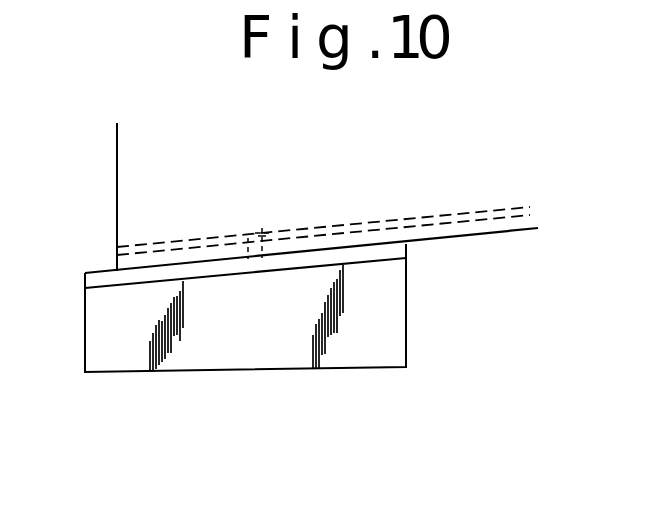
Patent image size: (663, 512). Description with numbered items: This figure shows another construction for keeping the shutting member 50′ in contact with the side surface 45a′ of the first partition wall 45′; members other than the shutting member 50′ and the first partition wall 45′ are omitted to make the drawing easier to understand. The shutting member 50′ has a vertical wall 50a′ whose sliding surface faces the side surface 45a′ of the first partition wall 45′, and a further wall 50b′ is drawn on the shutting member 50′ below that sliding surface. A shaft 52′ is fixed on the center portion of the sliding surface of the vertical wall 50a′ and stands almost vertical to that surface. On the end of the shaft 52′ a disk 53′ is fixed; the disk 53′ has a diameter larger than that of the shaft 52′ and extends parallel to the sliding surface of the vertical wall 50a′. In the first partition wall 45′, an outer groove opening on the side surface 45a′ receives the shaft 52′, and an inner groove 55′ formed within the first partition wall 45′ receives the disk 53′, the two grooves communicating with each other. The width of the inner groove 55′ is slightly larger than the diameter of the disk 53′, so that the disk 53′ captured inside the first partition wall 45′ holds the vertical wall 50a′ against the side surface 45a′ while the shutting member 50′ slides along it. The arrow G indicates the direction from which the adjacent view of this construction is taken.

The first partition wall 45′ is at (147, 173).
The side surface of the first partition wall 45a′ is at (516, 235).
The shutting member 50′ is at (267, 377).
The vertical wall of the shutting member 50a′ is at (406, 250).
The side wall of bracket 50b′ is at (395, 315).
The shaft 52′ is at (233, 248).
The disk 53′ is at (262, 233).
The inner groove 55′ is at (492, 210).
The direction of arrow G is at (335, 394).